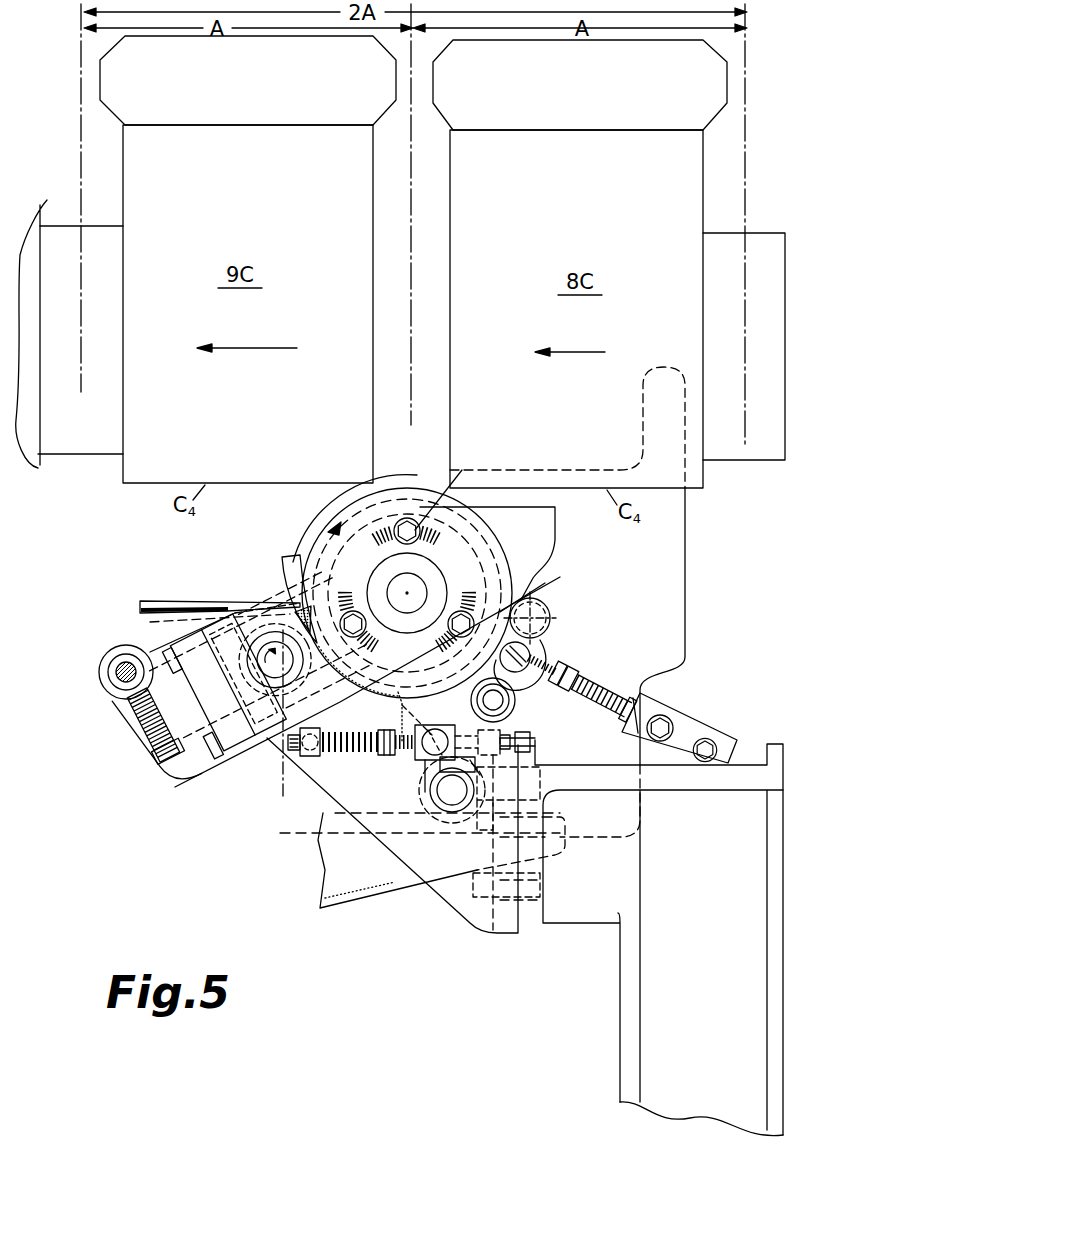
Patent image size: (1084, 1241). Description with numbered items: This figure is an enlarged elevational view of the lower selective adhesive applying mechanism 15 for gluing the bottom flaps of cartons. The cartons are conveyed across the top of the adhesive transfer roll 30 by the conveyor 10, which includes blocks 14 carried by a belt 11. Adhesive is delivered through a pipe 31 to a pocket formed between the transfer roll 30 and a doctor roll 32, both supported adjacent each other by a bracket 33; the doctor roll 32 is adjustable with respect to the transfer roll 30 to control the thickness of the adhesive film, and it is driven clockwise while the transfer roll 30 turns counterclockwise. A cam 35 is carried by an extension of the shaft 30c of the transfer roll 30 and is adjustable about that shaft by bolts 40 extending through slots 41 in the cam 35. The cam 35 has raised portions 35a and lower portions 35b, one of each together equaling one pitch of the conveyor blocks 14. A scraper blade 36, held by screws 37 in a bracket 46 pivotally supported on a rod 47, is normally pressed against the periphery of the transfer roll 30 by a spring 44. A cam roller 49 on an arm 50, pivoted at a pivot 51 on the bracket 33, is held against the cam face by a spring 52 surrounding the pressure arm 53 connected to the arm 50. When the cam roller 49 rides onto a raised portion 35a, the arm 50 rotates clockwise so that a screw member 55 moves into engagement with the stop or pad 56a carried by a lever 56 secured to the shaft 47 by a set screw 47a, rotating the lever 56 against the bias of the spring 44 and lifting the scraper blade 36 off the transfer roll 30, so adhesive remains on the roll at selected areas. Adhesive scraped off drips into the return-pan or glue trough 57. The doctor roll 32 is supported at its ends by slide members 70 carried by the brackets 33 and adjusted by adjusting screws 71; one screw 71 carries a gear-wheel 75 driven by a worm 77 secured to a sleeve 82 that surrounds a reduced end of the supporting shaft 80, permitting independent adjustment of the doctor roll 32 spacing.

The conveyor 10 is at (82, 492).
The belt 11 is at (45, 205).
The blocks 14 is at (90, 228).
The lower selective adhesive applying mechanism 15 is at (618, 578).
The transfer roll 30 is at (307, 610).
The shaft 30c is at (400, 590).
The pipe 31 is at (153, 601).
The doctor roll 32 is at (297, 620).
The bracket 33 is at (200, 619).
The cam 35 is at (487, 535).
The raised portions 35a is at (332, 527).
The lower portions 35b is at (500, 570).
The scraper blade 36 is at (405, 706).
The screws 37 is at (438, 740).
The bolts 40 is at (488, 529).
The slots 41 is at (445, 542).
The spring 44 is at (360, 748).
The bracket 46 is at (425, 766).
The rod 47 is at (440, 805).
The set screw 47a is at (420, 812).
The cam roller 49 is at (548, 610).
The arm 50 is at (540, 648).
The pivot 51 is at (512, 702).
The spring 52 is at (595, 688).
The pressure arm 53 is at (548, 668).
The screw member 55 is at (533, 740).
The lever 56 is at (428, 775).
The stop or pad 56a is at (483, 755).
The return-pan or glue trough 57 is at (410, 883).
The slide members 70 is at (251, 703).
The adjusting screws 71 is at (142, 737).
The gear-wheel 75 is at (158, 760).
The worm 77 is at (112, 655).
The supporting shaft 80 is at (117, 680).
The sleeve 82 is at (118, 672).